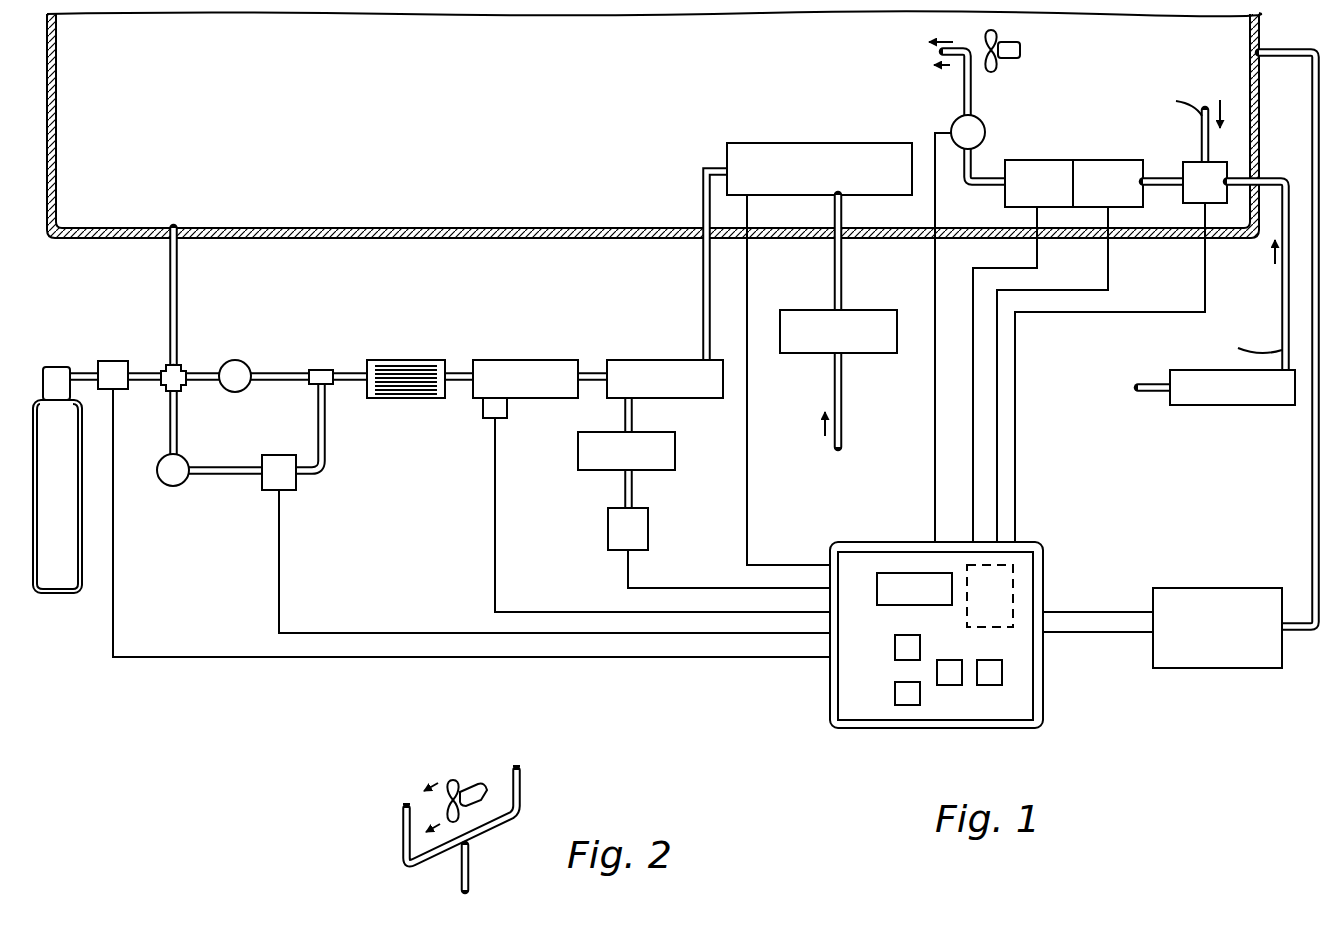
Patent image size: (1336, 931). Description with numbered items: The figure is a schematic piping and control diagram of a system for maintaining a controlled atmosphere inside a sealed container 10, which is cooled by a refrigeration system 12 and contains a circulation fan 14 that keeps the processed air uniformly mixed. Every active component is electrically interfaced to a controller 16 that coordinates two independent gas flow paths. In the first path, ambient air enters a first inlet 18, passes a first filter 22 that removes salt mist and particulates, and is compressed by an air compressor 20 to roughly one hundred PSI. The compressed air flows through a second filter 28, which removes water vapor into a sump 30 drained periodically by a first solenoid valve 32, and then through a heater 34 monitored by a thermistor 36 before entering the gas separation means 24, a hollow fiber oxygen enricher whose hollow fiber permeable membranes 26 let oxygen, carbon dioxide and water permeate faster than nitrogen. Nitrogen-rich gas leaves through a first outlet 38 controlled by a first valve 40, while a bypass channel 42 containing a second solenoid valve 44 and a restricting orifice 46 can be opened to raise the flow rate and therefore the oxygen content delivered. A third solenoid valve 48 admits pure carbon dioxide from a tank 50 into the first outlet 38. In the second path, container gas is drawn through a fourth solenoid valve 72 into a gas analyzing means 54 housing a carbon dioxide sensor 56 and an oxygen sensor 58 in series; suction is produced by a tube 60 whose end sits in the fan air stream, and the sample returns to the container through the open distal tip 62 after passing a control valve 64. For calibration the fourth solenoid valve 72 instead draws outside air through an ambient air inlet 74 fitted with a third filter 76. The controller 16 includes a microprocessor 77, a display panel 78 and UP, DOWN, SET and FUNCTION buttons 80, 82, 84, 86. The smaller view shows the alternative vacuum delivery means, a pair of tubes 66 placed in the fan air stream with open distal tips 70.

In FIG. 1, the sealed container 10 is at (492, 146).
In FIG. 1, the refrigeration system 12 is at (1217, 668).
In FIG. 1, the circulation fan 14 is at (1021, 46).
In FIG. 2, the circulation fan 14 is at (470, 788).
In FIG. 1, the controller 16 is at (942, 638).
In FIG. 1, the first inlet 18 is at (842, 395).
In FIG. 1, the air compressor 20 is at (800, 143).
In FIG. 1, the first filter 22 is at (873, 310).
In FIG. 1, the gas separation means 24 is at (405, 400).
In FIG. 1, the hollow fiber permeable membranes 26 is at (402, 361).
In FIG. 1, the second filter 28 is at (648, 360).
In FIG. 1, the sump 30 is at (668, 465).
In FIG. 1, the first solenoid valve 32 is at (648, 532).
In FIG. 1, the heater 34 is at (561, 346).
In FIG. 1, the thermistor 36 is at (487, 410).
In FIG. 1, the first outlet 38 is at (178, 293).
In FIG. 1, the first valve 40 is at (235, 359).
In FIG. 1, the bypass channel 42 is at (178, 416).
In FIG. 1, the second solenoid valve 44 is at (297, 487).
In FIG. 1, the restricting orifice 46 is at (173, 487).
In FIG. 1, the third solenoid valve 48 is at (113, 360).
In FIG. 1, the tank 50 is at (78, 595).
In FIG. 1, the gas analyzing means 54 is at (1078, 155).
In FIG. 1, the carbon dioxide sensor 56 is at (1161, 135).
In FIG. 1, the oxygen sensor 58 is at (1033, 160).
In FIG. 1, the tube 60 is at (963, 90).
In FIG. 1, the open distal tip 62 is at (948, 50).
In FIG. 1, the control valve 64 is at (980, 121).
In FIG. 2, the tubes 66 is at (403, 831).
In FIG. 2, the open distal tips 70 is at (404, 806).
In FIG. 1, the fourth solenoid valve 72 is at (1190, 203).
In FIG. 1, the ambient air inlet 74 is at (1282, 279).
In FIG. 1, the third filter 76 is at (1210, 405).
In FIG. 1, the microprocessor 77 is at (1015, 576).
In FIG. 1, the display panel 78 is at (1022, 657).
In FIG. 1, the UP button 80 is at (897, 648).
In FIG. 1, the DOWN button 82 is at (907, 704).
In FIG. 1, the SET button 84 is at (948, 681).
In FIG. 1, the FUNCTION button 86 is at (990, 681).